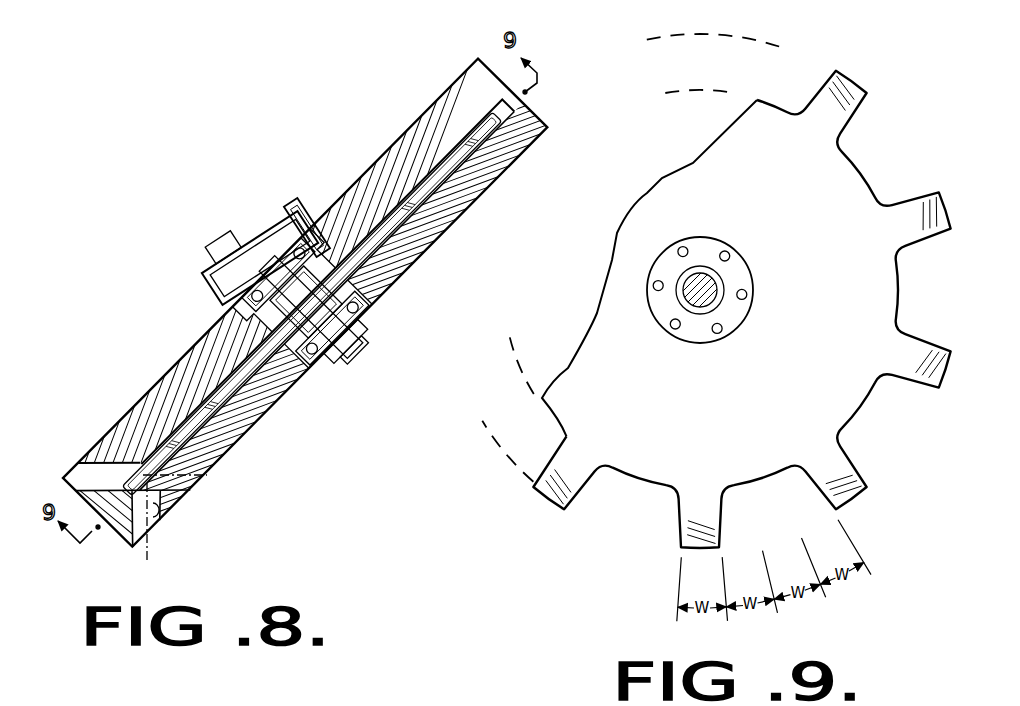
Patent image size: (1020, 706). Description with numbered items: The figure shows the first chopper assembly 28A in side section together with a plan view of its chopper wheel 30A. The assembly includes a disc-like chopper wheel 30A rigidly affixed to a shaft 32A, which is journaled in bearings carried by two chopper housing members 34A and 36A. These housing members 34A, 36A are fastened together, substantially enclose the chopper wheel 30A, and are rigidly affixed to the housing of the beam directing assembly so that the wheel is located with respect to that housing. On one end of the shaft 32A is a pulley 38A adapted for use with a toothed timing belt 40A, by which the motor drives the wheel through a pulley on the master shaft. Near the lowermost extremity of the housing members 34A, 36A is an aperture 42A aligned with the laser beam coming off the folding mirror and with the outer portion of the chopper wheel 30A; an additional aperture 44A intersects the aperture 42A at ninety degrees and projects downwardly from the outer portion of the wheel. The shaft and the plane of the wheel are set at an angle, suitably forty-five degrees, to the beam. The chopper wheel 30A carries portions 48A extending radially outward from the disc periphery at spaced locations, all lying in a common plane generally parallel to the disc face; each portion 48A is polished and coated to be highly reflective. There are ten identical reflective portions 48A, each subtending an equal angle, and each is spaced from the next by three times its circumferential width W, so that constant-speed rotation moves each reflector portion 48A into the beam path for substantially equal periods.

In FIG. 8, the first chopper assembly 28A is at (418, 110).
In FIG. 8, the chopper wheel 30A is at (390, 212).
In FIG. 9, the chopper wheel 30A is at (645, 470).
In FIG. 8, the shaft 32A is at (350, 346).
In FIG. 9, the shaft 32A is at (712, 290).
In FIG. 8, the chopper housing member 34A is at (466, 78).
In FIG. 8, the chopper housing member 36A is at (535, 121).
In FIG. 8, the pulley 38A is at (210, 262).
In FIG. 8, the toothed timing belt 40A is at (297, 177).
In FIG. 8, the aperture 42A is at (218, 468).
In FIG. 8, the additional aperture 44A is at (160, 522).
In FIG. 9, the reflective portion 48A is at (848, 88).